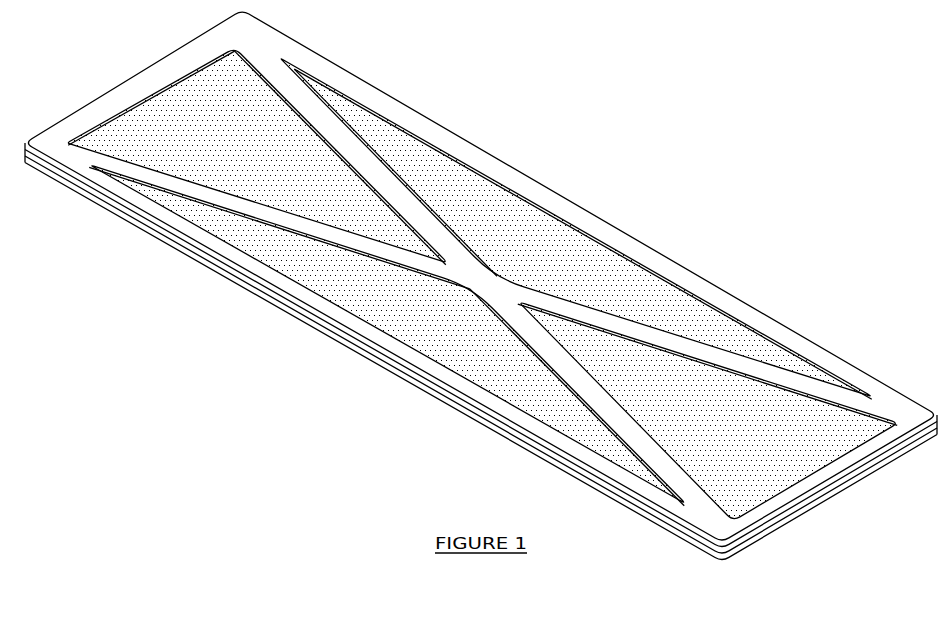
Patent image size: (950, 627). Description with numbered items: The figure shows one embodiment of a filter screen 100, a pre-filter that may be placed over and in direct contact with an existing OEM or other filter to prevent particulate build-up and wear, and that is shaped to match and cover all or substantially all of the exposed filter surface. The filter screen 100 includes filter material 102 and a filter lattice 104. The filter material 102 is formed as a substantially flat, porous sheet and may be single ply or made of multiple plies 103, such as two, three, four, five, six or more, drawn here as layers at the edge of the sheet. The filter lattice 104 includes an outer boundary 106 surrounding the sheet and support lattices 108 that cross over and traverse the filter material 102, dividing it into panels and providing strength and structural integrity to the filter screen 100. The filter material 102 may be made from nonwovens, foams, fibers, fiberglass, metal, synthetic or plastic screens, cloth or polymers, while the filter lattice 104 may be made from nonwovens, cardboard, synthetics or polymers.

The filter screen 100 is at (481, 285).
The filter material 102 is at (610, 286).
The filter plies 103 is at (816, 502).
The filter lattice 104 is at (472, 151).
The outer boundary 106 is at (770, 327).
The support lattices 108 is at (567, 358).